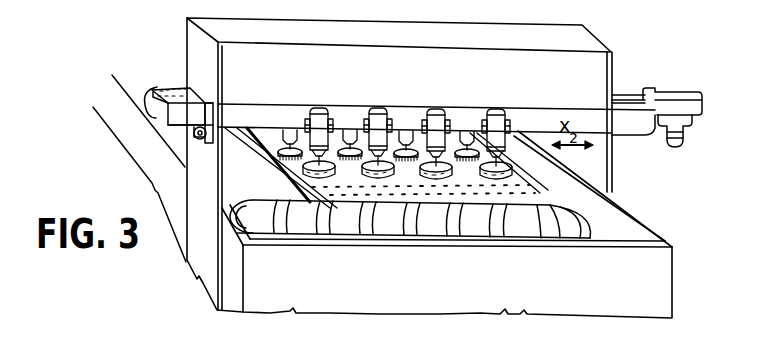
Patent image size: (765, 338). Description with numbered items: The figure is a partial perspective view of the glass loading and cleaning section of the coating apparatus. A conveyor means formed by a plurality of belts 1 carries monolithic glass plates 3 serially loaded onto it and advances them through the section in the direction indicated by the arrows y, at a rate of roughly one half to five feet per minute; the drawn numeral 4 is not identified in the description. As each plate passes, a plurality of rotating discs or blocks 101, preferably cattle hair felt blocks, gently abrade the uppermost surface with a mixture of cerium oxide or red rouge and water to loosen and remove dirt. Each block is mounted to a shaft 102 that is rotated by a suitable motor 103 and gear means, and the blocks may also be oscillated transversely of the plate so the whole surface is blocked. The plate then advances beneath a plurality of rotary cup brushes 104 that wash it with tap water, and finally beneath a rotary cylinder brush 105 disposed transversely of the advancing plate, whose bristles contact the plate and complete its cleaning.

The belts 1 is at (463, 227).
The monolithic glass plates 3 is at (533, 191).
The workpiece guide track 4 is at (352, 186).
The rotating discs or blocks 101 is at (373, 167).
The shaft 102 is at (506, 163).
The motor 103 is at (683, 132).
The rotary cup brushes 104 is at (281, 153).
The rotary cylinder brush 105 is at (157, 88).